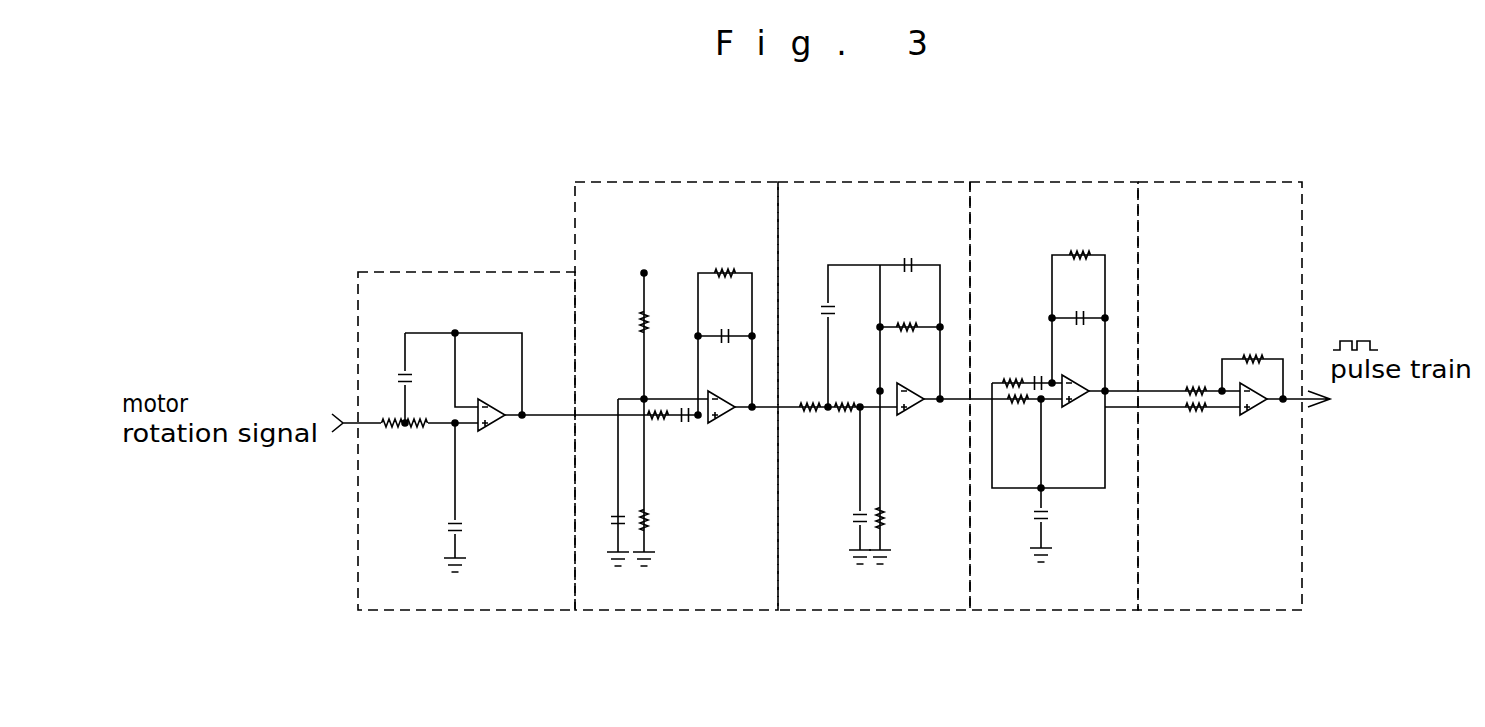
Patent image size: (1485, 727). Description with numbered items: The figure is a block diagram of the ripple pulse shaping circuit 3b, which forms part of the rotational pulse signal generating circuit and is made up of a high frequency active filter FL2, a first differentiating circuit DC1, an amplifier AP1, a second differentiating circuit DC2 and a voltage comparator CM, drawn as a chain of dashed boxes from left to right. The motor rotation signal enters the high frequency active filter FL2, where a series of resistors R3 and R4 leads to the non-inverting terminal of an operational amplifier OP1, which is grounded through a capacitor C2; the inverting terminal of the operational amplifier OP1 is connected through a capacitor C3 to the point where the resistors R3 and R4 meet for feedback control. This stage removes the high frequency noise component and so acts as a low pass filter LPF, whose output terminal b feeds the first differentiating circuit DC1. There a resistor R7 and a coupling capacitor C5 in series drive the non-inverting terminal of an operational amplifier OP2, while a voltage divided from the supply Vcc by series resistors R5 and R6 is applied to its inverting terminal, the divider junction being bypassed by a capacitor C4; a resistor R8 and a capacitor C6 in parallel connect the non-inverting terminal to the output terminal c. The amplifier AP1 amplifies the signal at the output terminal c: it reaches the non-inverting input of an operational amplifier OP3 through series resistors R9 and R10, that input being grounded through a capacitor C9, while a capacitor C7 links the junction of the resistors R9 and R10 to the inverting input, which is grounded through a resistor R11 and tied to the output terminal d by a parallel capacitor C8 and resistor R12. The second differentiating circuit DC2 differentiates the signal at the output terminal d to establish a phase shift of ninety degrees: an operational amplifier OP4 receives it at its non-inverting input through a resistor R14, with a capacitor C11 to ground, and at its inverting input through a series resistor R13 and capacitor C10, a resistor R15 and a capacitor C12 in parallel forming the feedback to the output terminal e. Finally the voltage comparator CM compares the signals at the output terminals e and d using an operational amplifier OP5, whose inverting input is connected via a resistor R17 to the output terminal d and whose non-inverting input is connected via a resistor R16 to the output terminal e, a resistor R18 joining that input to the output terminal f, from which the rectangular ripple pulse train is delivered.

The ripple pulse shaping circuit 3b is at (973, 627).
The low pass filter LPF is at (447, 393).
The high frequency active filter FL2 is at (432, 235).
The first differentiating circuit DC1 is at (676, 350).
The amplifier AP1 is at (874, 379).
The second differentiating circuit DC2 is at (1060, 350).
The voltage comparator CM is at (1243, 363).
The resistor R3 is at (389, 420).
The resistor R4 is at (412, 430).
The capacitor C2 is at (471, 497).
The capacitor C3 is at (420, 378).
The operational amplifier OP1 is at (494, 437).
The supply voltage Vcc is at (632, 254).
The resistor R5 is at (623, 325).
The resistor R6 is at (655, 520).
The resistor R7 is at (660, 430).
The resistor R8 is at (722, 254).
The bypass capacitor C4 is at (612, 525).
The coupling capacitor C5 is at (687, 428).
The capacitor C6 is at (725, 320).
The operational amplifier OP2 is at (736, 426).
The resistor R9 is at (805, 400).
The resistor R10 is at (840, 415).
The resistor R11 is at (885, 518).
The resistor R12 is at (911, 308).
The capacitor C7 is at (844, 306).
The capacitor C8 is at (903, 247).
The capacitor C9 is at (844, 485).
The operational amplifier OP3 is at (921, 422).
The resistor R13 is at (1012, 380).
The resistor R14 is at (1015, 410).
The resistor R15 is at (1081, 236).
The capacitor C10 is at (1040, 376).
The capacitor C11 is at (1053, 516).
The capacitor C12 is at (1079, 301).
The operational amplifier OP4 is at (1073, 415).
The resistor R16 is at (1197, 385).
The resistor R17 is at (1196, 412).
The resistor R18 is at (1255, 340).
The operational amplifier OP5 is at (1250, 420).
The output terminal b is at (549, 396).
The output terminal c is at (761, 385).
The output terminal d is at (951, 380).
The output terminal e is at (1116, 368).
The output terminal f is at (1352, 398).